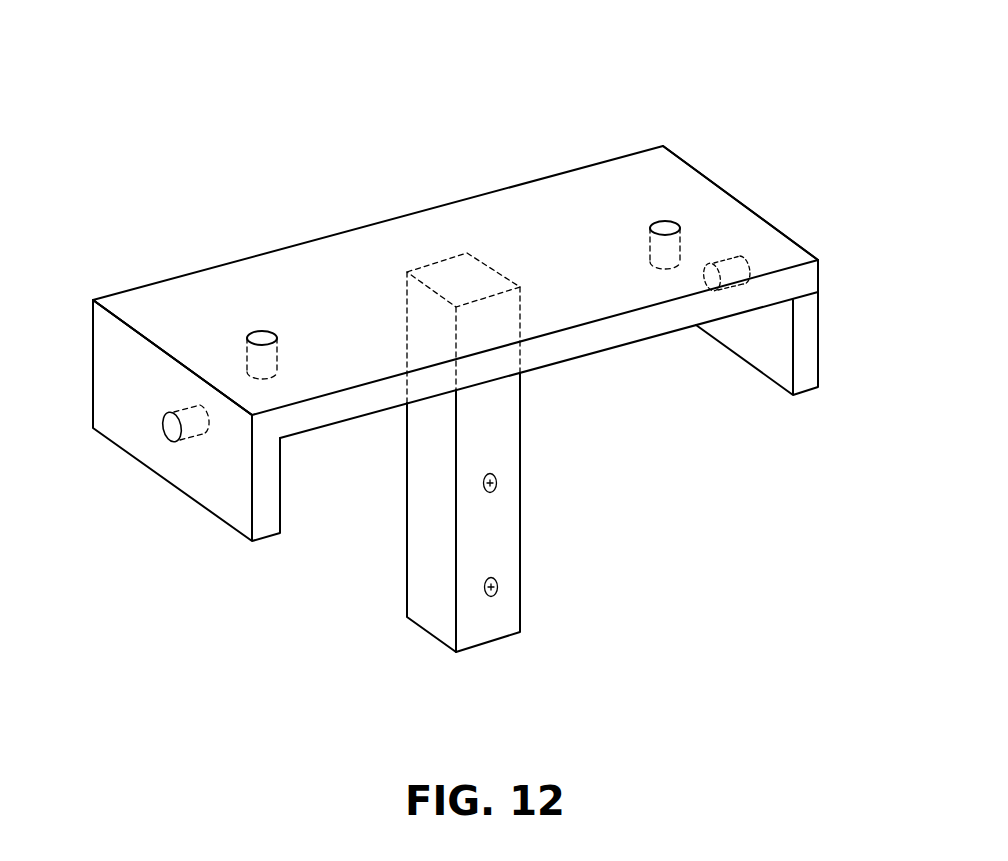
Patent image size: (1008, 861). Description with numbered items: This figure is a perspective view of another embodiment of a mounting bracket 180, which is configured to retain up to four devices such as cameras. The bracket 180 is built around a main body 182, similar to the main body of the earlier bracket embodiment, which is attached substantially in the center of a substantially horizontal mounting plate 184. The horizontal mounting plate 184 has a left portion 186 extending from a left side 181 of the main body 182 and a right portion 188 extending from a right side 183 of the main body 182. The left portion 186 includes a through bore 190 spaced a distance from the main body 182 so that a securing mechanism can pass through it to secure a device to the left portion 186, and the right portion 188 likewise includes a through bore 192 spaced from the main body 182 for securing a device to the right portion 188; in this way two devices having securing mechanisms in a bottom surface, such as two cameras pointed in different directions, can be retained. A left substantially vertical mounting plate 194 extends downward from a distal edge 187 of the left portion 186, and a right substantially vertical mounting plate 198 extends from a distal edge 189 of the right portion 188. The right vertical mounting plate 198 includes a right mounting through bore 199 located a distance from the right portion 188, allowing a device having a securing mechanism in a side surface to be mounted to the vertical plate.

The mounting bracket 180 is at (452, 374).
The left side 181 is at (407, 493).
The main body 182 is at (462, 490).
The right side 183 is at (518, 427).
The substantially horizontal mounting plate 184 is at (425, 230).
The left portion 186 is at (175, 338).
The distal edge 187 is at (117, 318).
The right portion 188 is at (605, 190).
The distal edge 189 is at (725, 185).
The through bore 190 is at (258, 331).
The through bore 192 is at (668, 221).
The left substantially vertical mounting plate 194 is at (204, 472).
The right substantially vertical mounting plate 198 is at (760, 340).
The right mounting through bore 199 is at (728, 262).